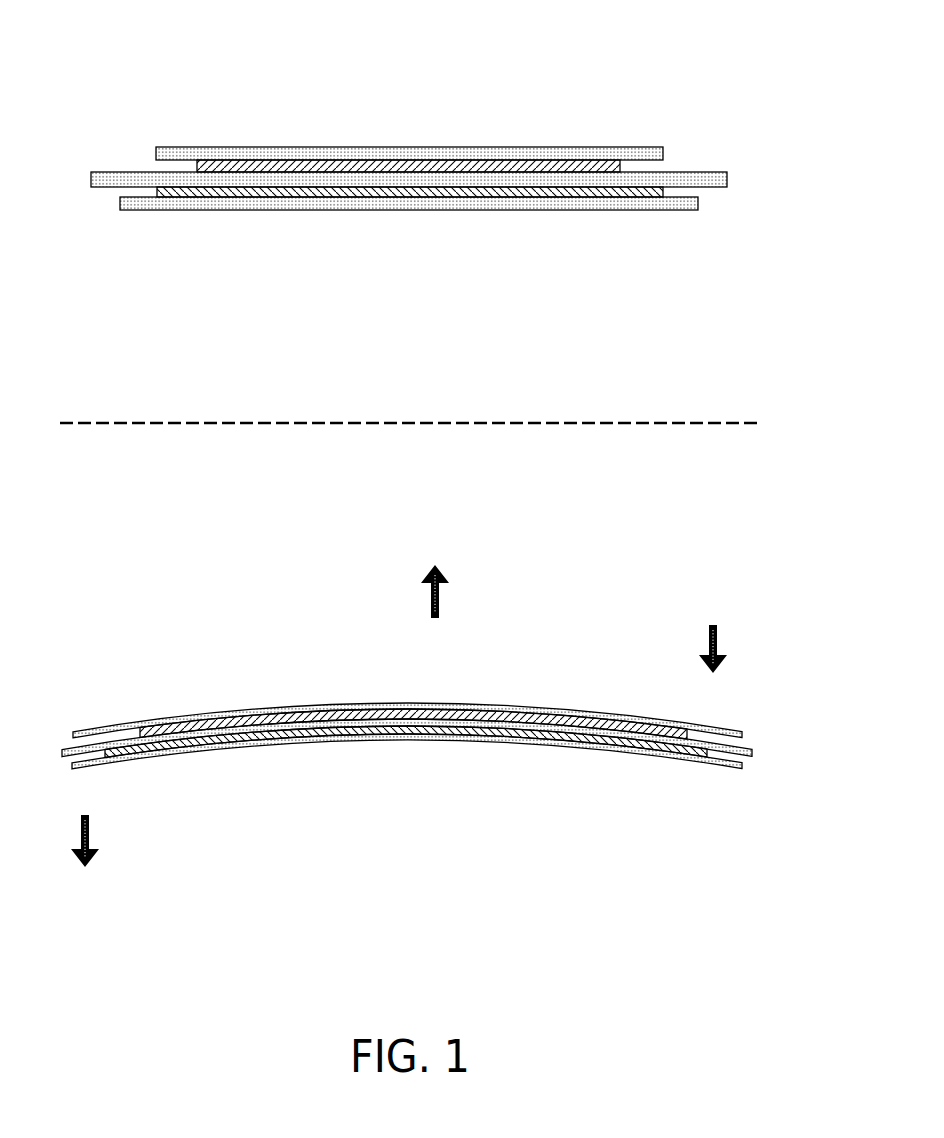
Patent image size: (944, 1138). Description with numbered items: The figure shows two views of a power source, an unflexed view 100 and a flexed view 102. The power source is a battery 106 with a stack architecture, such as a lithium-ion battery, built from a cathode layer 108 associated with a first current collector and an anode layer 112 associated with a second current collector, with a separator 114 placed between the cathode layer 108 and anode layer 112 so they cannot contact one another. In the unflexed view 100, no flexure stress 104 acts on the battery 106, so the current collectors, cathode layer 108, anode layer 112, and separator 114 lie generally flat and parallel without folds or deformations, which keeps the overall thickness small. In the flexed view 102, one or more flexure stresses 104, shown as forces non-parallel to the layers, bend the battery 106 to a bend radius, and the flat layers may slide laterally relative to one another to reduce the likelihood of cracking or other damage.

The unflexed view 100 is at (586, 44).
The flexed view 102 is at (599, 489).
The flexure stress 104 is at (708, 643).
The battery 106 is at (229, 102).
The cathode layer 108 is at (393, 163).
The anode layer 112 is at (412, 192).
The separator 114 is at (256, 179).